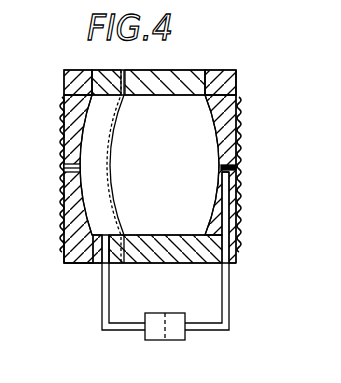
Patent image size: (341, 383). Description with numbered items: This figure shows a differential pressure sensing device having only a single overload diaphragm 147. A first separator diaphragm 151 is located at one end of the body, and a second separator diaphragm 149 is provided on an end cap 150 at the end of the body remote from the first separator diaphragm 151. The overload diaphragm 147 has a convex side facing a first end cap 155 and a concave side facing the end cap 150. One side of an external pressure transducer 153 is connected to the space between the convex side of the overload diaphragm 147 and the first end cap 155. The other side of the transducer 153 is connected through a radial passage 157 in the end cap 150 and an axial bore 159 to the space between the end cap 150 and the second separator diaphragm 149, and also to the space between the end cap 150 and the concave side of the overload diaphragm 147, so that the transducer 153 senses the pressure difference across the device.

The end cap 150 is at (238, 71).
The first separator diaphragm 151 is at (63, 170).
The second separator diaphragm 149 is at (242, 189).
The axial bore 159 is at (238, 167).
The radial passage 157 is at (239, 244).
The first end cap 155 is at (76, 249).
The overload diaphragm 147 is at (113, 172).
The external pressure transducer 153 is at (178, 329).